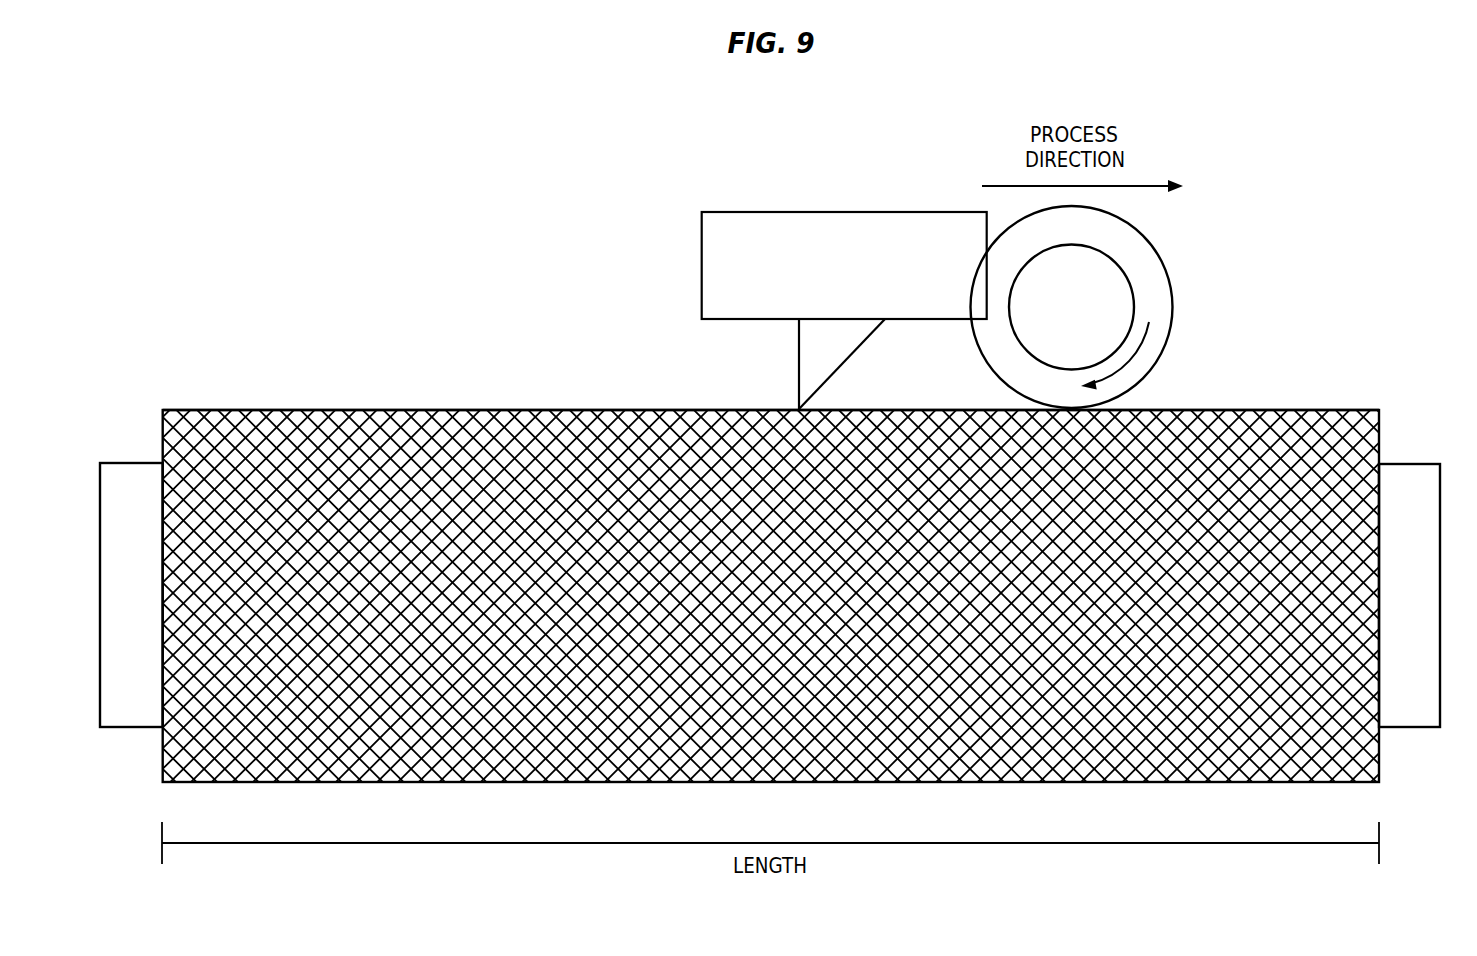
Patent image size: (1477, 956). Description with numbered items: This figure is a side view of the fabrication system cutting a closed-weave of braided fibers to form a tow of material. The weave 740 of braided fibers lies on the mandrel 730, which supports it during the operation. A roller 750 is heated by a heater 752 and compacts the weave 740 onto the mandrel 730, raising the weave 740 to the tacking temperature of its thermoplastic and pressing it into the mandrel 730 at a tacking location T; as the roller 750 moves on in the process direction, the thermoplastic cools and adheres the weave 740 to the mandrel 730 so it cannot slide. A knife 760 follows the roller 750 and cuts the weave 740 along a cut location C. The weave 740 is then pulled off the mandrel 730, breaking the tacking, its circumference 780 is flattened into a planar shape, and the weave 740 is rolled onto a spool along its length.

The mandrel 730 is at (1413, 464).
The weave 740 is at (1352, 409).
The roller 750 is at (1163, 262).
The heater 752 is at (1052, 318).
The knife 760 is at (861, 350).
The circumference 780 is at (500, 409).
The cut location C is at (785, 404).
The tacking location T is at (1152, 395).